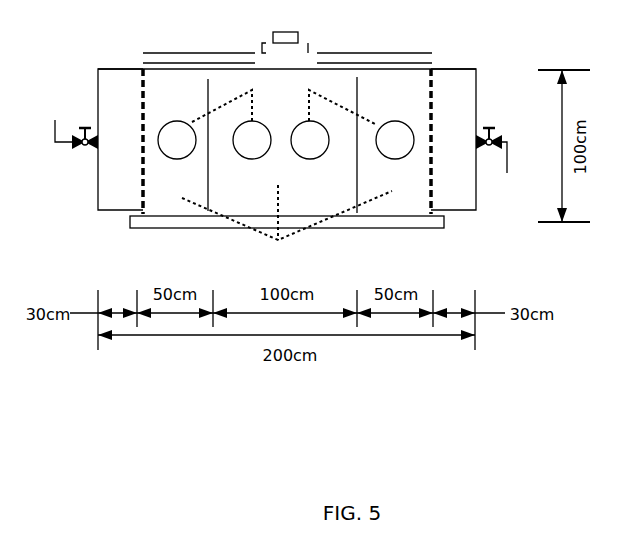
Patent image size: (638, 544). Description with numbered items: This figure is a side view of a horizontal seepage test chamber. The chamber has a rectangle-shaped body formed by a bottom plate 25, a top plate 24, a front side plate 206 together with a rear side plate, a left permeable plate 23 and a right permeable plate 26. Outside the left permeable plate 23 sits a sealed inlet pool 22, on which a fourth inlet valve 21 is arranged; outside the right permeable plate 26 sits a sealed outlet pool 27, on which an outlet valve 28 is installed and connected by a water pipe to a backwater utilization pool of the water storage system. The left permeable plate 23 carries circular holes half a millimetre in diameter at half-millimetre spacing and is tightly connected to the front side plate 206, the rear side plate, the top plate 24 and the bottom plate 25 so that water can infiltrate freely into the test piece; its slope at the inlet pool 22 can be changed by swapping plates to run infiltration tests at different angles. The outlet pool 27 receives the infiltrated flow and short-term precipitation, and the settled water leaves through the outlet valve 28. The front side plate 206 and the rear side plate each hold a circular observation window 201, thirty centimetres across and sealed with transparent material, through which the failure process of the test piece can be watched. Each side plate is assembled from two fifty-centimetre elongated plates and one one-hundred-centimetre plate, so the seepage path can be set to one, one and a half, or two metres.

The fourth inlet valve 21 is at (76, 157).
The inlet pool 22 is at (120, 139).
The left permeable plate 23 is at (141, 66).
The top plate 24 is at (287, 46).
The bottom plate 25 is at (287, 235).
The right permeable plate 26 is at (433, 66).
The outlet pool 27 is at (453, 139).
The outlet valve 28 is at (501, 128).
The observation window 201 is at (286, 116).
The front side plate 206 is at (287, 230).